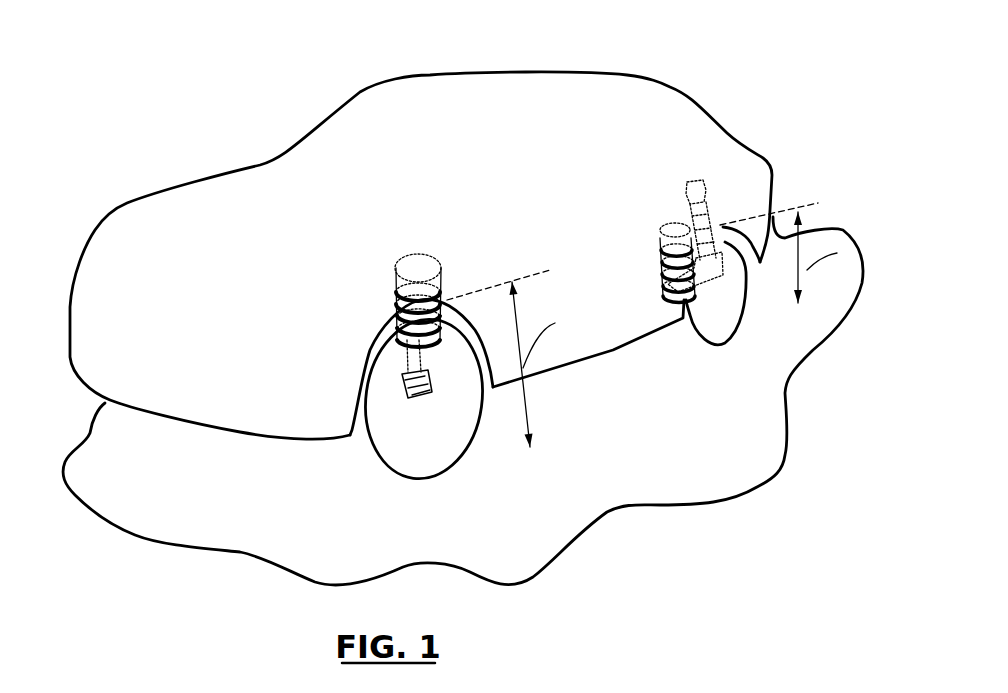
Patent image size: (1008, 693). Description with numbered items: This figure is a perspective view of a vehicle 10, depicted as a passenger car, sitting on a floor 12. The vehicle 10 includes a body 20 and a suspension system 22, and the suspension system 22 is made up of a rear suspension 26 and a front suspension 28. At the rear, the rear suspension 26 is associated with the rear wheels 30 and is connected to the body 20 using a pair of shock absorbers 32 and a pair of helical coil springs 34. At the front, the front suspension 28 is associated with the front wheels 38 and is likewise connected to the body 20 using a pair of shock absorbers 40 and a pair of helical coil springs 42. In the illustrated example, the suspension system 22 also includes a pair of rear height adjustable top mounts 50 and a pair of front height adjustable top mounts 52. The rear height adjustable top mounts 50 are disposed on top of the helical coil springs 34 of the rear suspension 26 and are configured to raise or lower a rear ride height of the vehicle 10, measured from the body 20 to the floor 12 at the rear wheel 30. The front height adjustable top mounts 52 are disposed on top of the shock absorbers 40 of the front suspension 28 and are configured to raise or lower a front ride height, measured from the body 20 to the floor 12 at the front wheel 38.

The vehicle 10 is at (137, 106).
The floor 12 is at (755, 465).
The body 20 is at (583, 360).
The suspension system 22 is at (508, 158).
The rear suspension 26 is at (665, 183).
The front suspension 28 is at (392, 236).
The rear wheels 30 is at (750, 272).
The shock absorbers 32 is at (697, 213).
The helical coil springs 34 is at (663, 273).
The front wheels 38 is at (467, 447).
The shock absorbers 40 is at (417, 348).
The helical coil springs 42 is at (442, 295).
The rear height adjustable top mounts 50 is at (673, 233).
The front height adjustable top mounts 52 is at (410, 273).